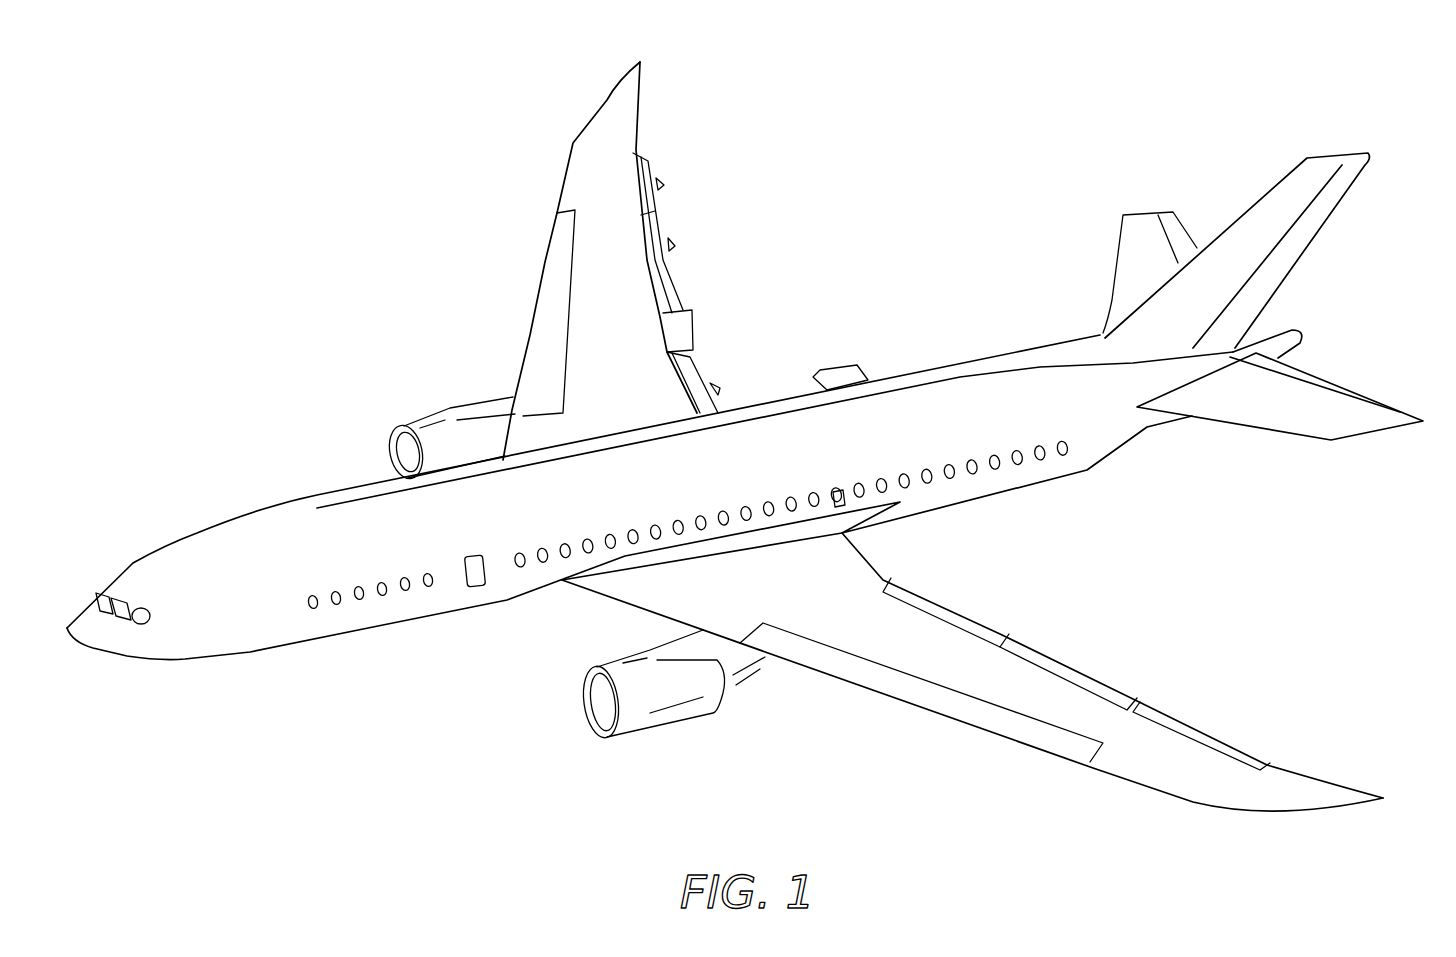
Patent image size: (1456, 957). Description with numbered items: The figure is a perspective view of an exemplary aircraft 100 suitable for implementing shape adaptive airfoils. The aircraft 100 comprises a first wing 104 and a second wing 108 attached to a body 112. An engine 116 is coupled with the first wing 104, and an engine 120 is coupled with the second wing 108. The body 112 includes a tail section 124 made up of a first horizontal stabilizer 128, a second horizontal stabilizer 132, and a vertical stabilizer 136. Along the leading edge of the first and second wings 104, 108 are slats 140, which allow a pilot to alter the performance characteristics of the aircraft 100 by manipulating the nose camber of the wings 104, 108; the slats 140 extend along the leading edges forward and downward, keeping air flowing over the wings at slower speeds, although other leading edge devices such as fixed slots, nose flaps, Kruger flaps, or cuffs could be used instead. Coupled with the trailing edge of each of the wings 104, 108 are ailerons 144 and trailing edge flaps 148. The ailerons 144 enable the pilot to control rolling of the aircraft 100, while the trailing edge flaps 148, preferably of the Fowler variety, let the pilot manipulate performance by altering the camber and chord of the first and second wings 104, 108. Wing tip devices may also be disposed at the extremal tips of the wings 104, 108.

The aircraft 100 is at (1070, 56).
The first wing 104 is at (1237, 808).
The second wing 108 is at (602, 95).
The body 112 is at (258, 651).
The engine 116 is at (636, 740).
The engine 120 is at (411, 418).
The tail section 124 is at (1332, 290).
The first horizontal stabilizer 128 is at (1303, 436).
The second horizontal stabilizer 132 is at (1138, 210).
The vertical stabilizer 136 is at (1317, 157).
The slats 140 is at (893, 685).
The ailerons 144 is at (1197, 727).
The trailing edge flaps 148 is at (965, 617).